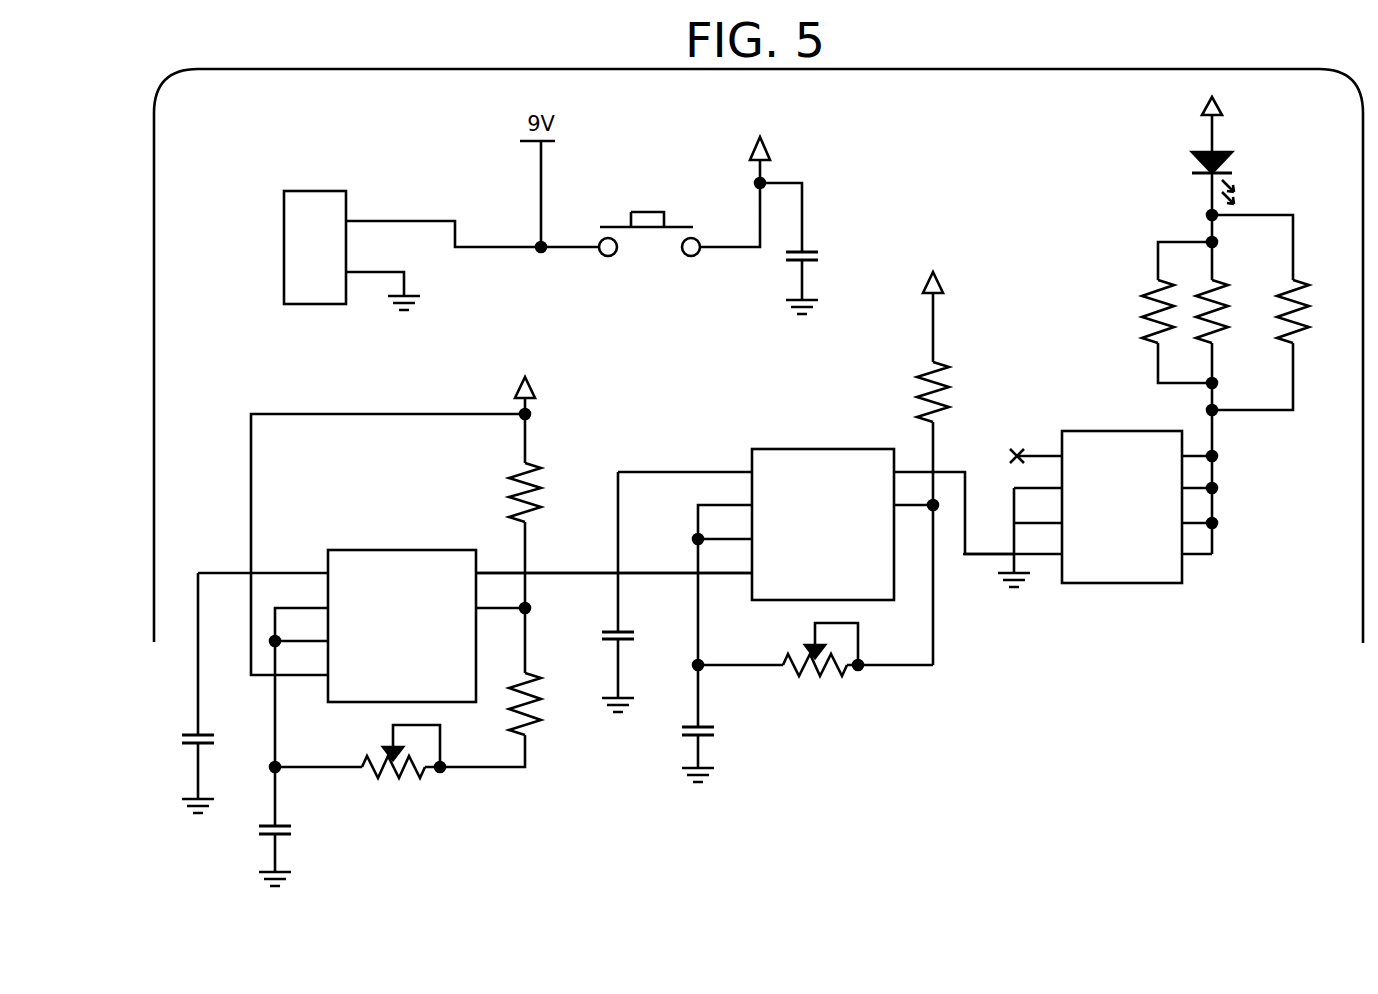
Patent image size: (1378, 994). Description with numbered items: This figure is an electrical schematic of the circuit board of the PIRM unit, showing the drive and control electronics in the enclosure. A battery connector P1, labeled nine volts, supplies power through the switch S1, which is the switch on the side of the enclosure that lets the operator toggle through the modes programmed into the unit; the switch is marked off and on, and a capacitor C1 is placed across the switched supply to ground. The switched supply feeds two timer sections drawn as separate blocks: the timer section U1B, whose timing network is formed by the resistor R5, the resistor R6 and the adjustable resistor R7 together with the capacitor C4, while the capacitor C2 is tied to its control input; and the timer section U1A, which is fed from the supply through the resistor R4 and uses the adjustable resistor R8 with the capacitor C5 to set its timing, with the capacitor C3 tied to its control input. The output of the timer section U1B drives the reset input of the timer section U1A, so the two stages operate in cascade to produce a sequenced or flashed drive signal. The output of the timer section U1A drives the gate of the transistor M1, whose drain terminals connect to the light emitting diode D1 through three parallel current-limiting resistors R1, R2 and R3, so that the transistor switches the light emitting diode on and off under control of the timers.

The 9V battery connector P1 is at (441, 252).
The switch S1 is at (680, 202).
The 0.1uF supply decoupling capacitor C1 is at (815, 248).
The LED indicator D1 is at (1242, 172).
The 180 ohm LED current-limiting resistor R1 is at (1154, 315).
The 180 ohm LED current-limiting resistor R2 is at (1235, 398).
The 220 ohm LED current-limiting resistor R3 is at (1281, 315).
The Si9410DY MOSFET driver transistor M1 is at (1090, 484).
The LM556 dual timer section A (pulse generator) U1A is at (745, 533).
The 1k timing resistor R4 is at (948, 458).
The 0.01uF control voltage capacitor C3 is at (646, 592).
The 470pF timing capacitor C5 is at (731, 723).
The 50k potentiometer (pulse width adjust) R8 is at (813, 667).
The LM556 dual timer section B (oscillator) U1B is at (475, 558).
The 1k timing resistor R5 is at (542, 543).
The 20k timing resistor R6 is at (516, 701).
The 50k potentiometer (frequency adjust) R7 is at (363, 768).
The 0.01uF control voltage capacitor C2 is at (225, 693).
The 0.1uF timing capacitor C4 is at (295, 826).